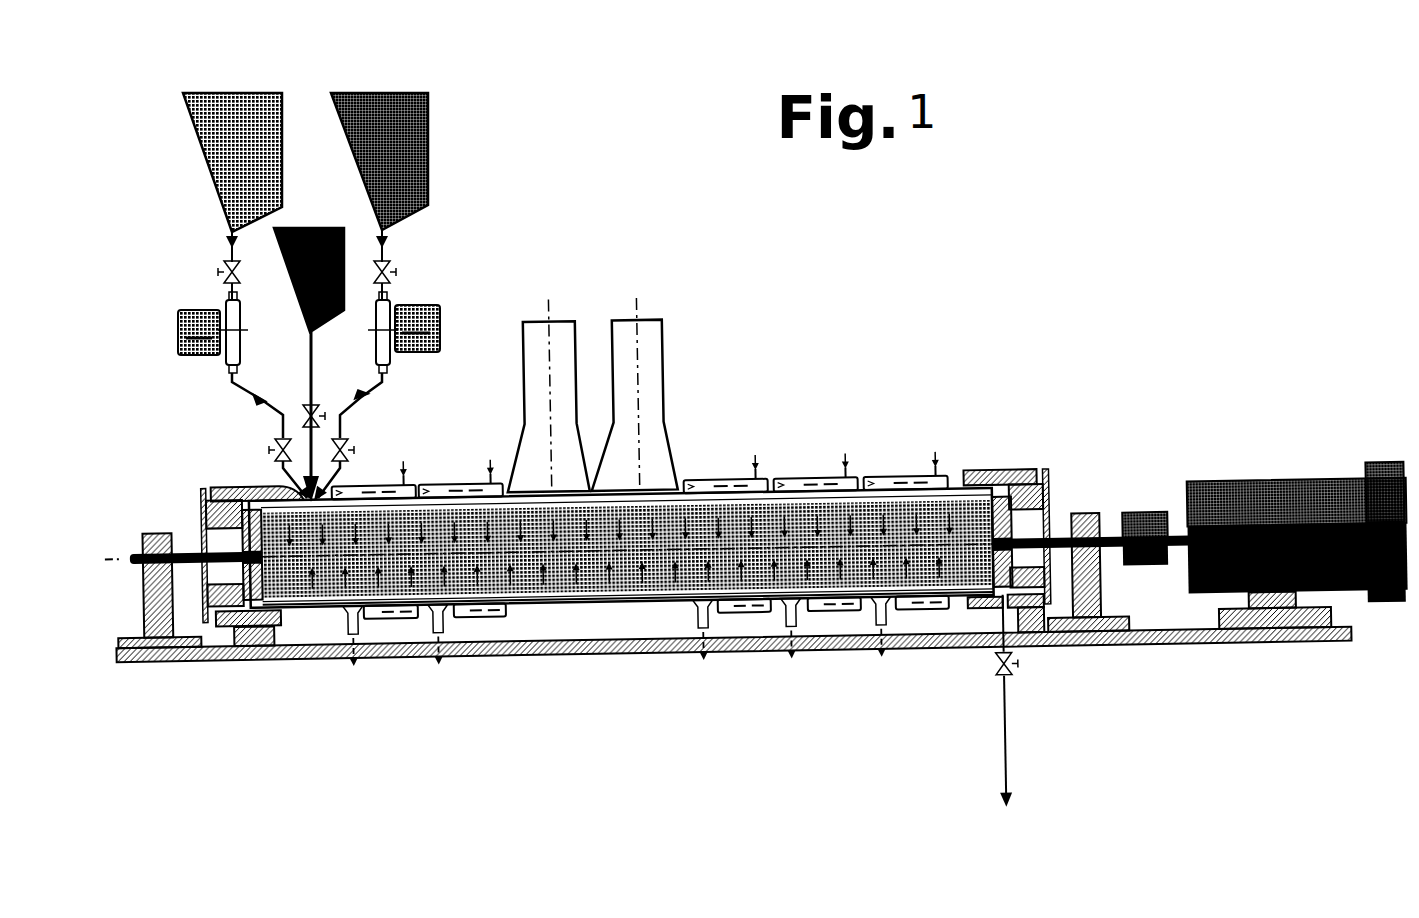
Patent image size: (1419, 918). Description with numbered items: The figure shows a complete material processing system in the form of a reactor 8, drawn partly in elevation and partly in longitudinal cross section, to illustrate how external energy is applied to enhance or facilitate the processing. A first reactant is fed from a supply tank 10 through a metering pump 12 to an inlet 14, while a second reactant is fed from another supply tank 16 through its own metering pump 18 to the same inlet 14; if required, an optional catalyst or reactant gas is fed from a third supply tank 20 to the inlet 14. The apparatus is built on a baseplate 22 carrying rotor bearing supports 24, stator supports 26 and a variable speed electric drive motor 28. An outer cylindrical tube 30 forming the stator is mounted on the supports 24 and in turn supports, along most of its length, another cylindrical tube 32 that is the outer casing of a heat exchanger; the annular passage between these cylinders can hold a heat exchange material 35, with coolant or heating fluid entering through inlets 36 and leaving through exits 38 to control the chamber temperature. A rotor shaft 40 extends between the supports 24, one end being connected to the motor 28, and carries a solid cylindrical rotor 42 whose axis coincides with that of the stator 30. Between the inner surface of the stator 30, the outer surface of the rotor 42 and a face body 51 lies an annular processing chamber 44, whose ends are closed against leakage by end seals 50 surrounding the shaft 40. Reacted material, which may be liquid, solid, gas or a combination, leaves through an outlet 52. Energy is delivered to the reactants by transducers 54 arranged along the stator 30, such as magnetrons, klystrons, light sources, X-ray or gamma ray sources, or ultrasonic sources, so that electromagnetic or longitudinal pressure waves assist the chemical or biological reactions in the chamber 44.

The reactor 8 is at (1034, 290).
The supply tank 10 is at (247, 118).
The metering pump 12 is at (193, 318).
The inlet 14 is at (300, 492).
The supply tank 16 is at (410, 158).
The metering pump 18 is at (420, 323).
The supply tank 20 is at (313, 290).
The baseplate 22 is at (562, 648).
The rotor bearing supports 24 is at (145, 608).
The stator supports 26 is at (253, 640).
The variable speed electric drive motor 28 is at (1267, 497).
The outer cylindrical apparatus member or cylindrical tube 30 is at (313, 607).
The cylindrical tube 32 is at (377, 623).
The heat exchange material 35 is at (798, 485).
The inlets 36 is at (937, 457).
The exits 38 is at (868, 632).
The rotor shaft 40 is at (1055, 528).
The cylindrical rotor or inner cylindrical apparatus member 42 is at (953, 493).
The annular cross section processing chamber 44 is at (618, 593).
The end seals 50 is at (1010, 560).
The face body 51 is at (222, 518).
The outlet 52 is at (992, 668).
The transducers 54 is at (643, 380).